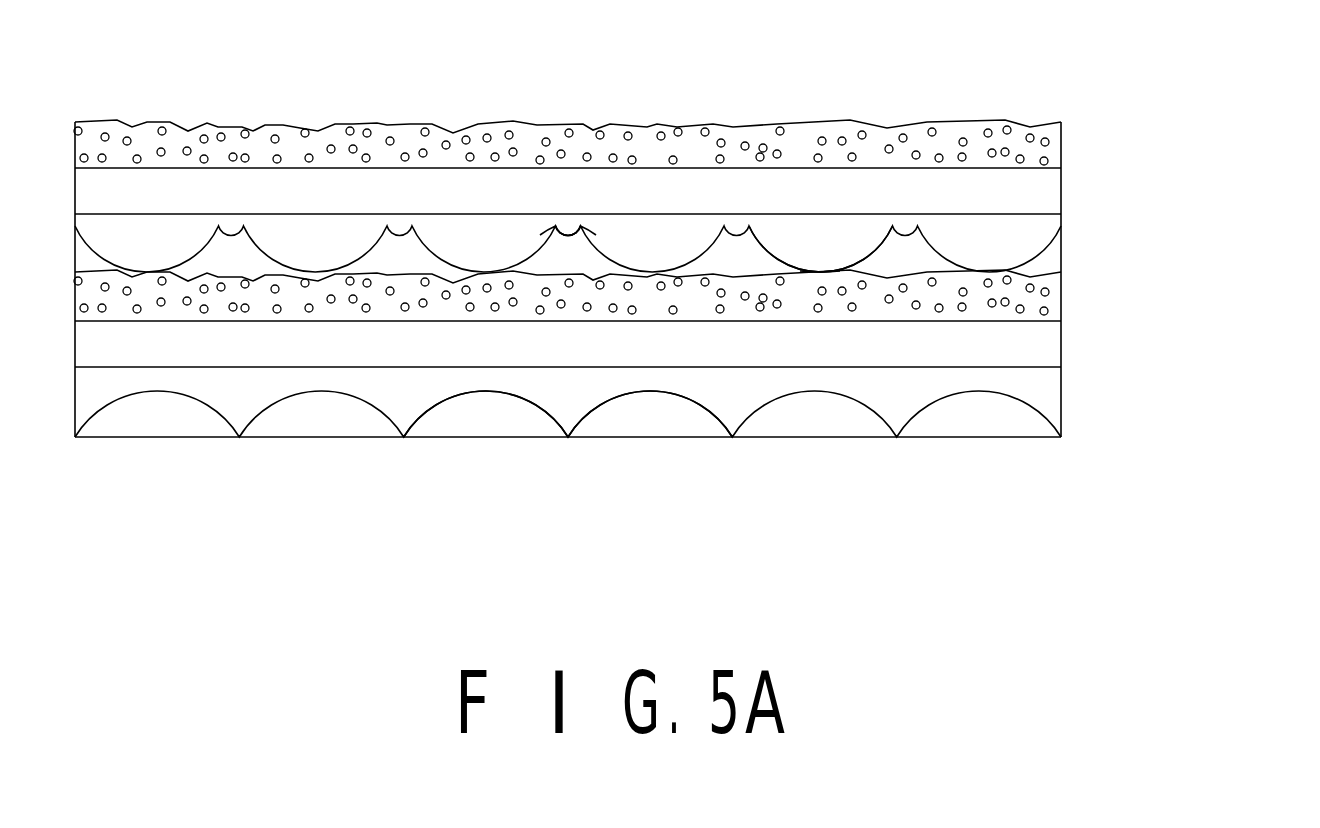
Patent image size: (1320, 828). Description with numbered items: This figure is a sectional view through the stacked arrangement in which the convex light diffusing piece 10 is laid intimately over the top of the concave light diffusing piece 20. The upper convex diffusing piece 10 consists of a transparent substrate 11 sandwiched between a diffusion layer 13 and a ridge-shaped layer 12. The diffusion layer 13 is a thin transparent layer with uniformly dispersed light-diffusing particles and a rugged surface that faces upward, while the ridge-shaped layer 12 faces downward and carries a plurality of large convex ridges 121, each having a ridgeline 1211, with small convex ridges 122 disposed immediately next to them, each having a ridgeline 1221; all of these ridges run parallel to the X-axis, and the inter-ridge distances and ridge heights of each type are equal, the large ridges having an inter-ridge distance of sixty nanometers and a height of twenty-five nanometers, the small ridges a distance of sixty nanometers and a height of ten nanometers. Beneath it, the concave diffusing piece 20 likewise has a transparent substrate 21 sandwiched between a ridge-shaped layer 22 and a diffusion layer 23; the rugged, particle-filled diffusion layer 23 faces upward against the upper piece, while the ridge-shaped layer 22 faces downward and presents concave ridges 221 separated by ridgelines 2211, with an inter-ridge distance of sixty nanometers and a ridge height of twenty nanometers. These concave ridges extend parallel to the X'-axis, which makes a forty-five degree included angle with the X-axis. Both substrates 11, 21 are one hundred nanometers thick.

The convex diffusing piece 10 is at (1218, 83).
The substrate 11 is at (1055, 192).
The ridge-shaped layer 12 is at (1015, 247).
The diffusion layer 13 is at (1055, 143).
The large convex ridges 121 is at (847, 240).
The ridgeline 1211 is at (817, 273).
The small convex ridges 122 is at (570, 226).
The ridgeline 1221 is at (563, 248).
The concave diffusing piece 20 is at (1218, 283).
The substrate 21 is at (1055, 348).
The ridge-shaped layer 22 is at (1055, 402).
The diffusion layer 23 is at (1055, 300).
The concave ridges 221 is at (630, 417).
The ridgeline 2211 is at (812, 438).